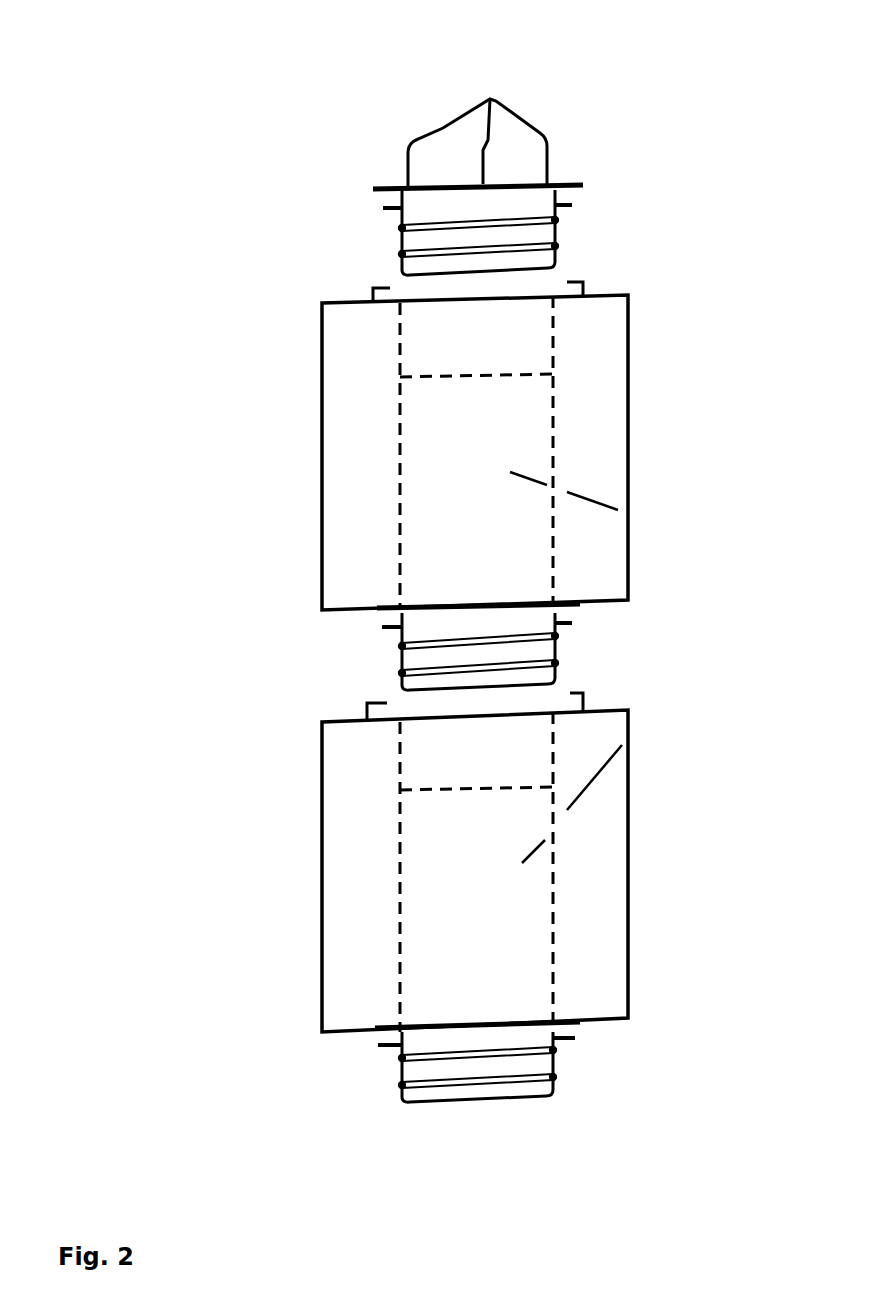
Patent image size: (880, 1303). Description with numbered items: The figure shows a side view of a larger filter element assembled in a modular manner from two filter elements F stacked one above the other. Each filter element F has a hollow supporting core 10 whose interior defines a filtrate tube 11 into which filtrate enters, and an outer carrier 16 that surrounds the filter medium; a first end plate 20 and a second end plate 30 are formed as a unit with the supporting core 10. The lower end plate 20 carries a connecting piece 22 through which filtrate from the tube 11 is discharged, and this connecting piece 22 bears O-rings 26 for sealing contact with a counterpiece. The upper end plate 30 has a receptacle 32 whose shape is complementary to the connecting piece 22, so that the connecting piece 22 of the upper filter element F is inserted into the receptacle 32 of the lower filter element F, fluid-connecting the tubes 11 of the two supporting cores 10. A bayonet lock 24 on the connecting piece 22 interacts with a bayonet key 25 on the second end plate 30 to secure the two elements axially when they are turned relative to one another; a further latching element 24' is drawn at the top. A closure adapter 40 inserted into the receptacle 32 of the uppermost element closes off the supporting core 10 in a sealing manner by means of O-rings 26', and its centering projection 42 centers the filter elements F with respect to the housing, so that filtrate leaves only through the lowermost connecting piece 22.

The supporting core 10 is at (552, 918).
The filtrate tube 11 is at (647, 713).
The outer carrier 16 is at (318, 867).
The first end plate 20 is at (609, 602).
The connecting piece 22 is at (400, 645).
The bayonet lock 24 is at (525, 833).
The seal ring 24' is at (528, 223).
The bayonet key 25 is at (590, 273).
The O-rings 26 is at (449, 1077).
The O-rings 26' is at (385, 237).
The second end plate 30 is at (337, 302).
The receptacle 32 is at (461, 362).
The closure adapter 40 is at (574, 116).
The centering projection 42 is at (443, 128).
The filter element F is at (337, 735).